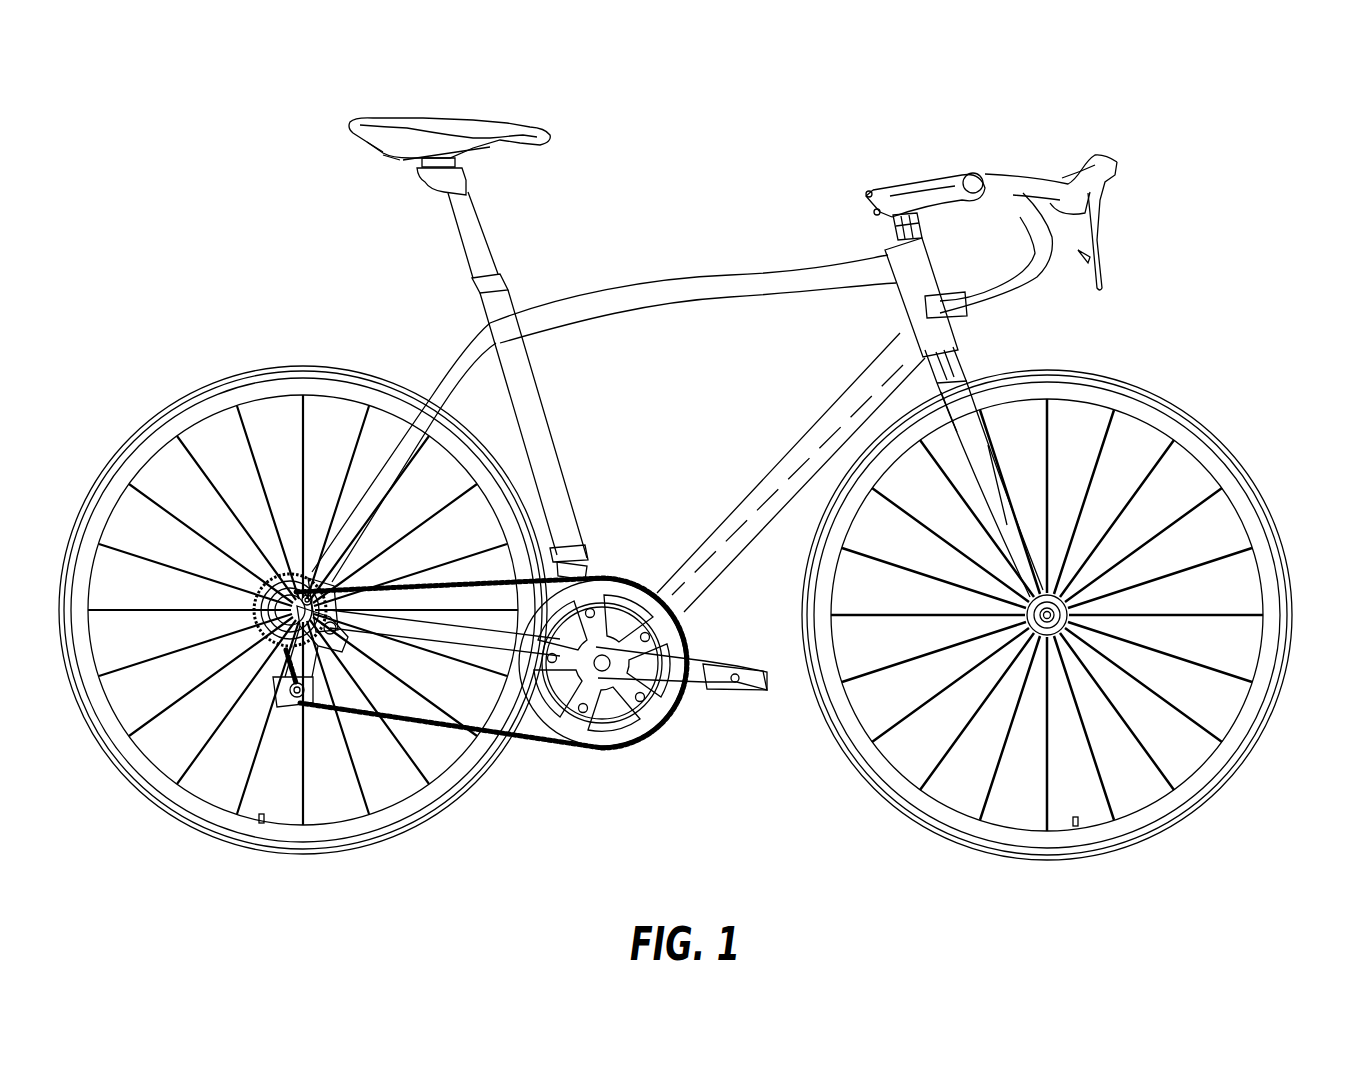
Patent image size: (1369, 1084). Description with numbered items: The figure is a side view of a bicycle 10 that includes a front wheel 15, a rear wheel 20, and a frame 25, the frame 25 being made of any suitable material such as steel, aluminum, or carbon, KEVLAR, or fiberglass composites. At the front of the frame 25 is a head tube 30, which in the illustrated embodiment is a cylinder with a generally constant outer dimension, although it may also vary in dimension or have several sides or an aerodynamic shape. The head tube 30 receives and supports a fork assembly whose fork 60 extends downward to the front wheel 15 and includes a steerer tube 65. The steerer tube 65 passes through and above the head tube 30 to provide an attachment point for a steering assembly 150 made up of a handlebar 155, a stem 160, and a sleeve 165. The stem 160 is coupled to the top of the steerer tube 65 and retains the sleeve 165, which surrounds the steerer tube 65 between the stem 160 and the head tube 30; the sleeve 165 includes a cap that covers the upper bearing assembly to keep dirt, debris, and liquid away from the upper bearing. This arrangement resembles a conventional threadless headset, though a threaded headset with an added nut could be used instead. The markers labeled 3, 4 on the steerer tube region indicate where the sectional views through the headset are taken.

The bicycle 10 is at (1312, 222).
The front wheel 15 is at (1291, 607).
The rear wheel 20 is at (98, 468).
The frame 25 is at (692, 273).
The head tube 30 is at (960, 285).
The fork 60 is at (988, 453).
The steerer tube 65 is at (897, 182).
The steering assembly 150 is at (1007, 122).
The handlebar 155 is at (1035, 277).
The stem 160 is at (915, 190).
The sleeve 165 is at (890, 232).
The section line for FIG. 3 is at (907, 232).
The section line for FIG. 4 is at (957, 372).